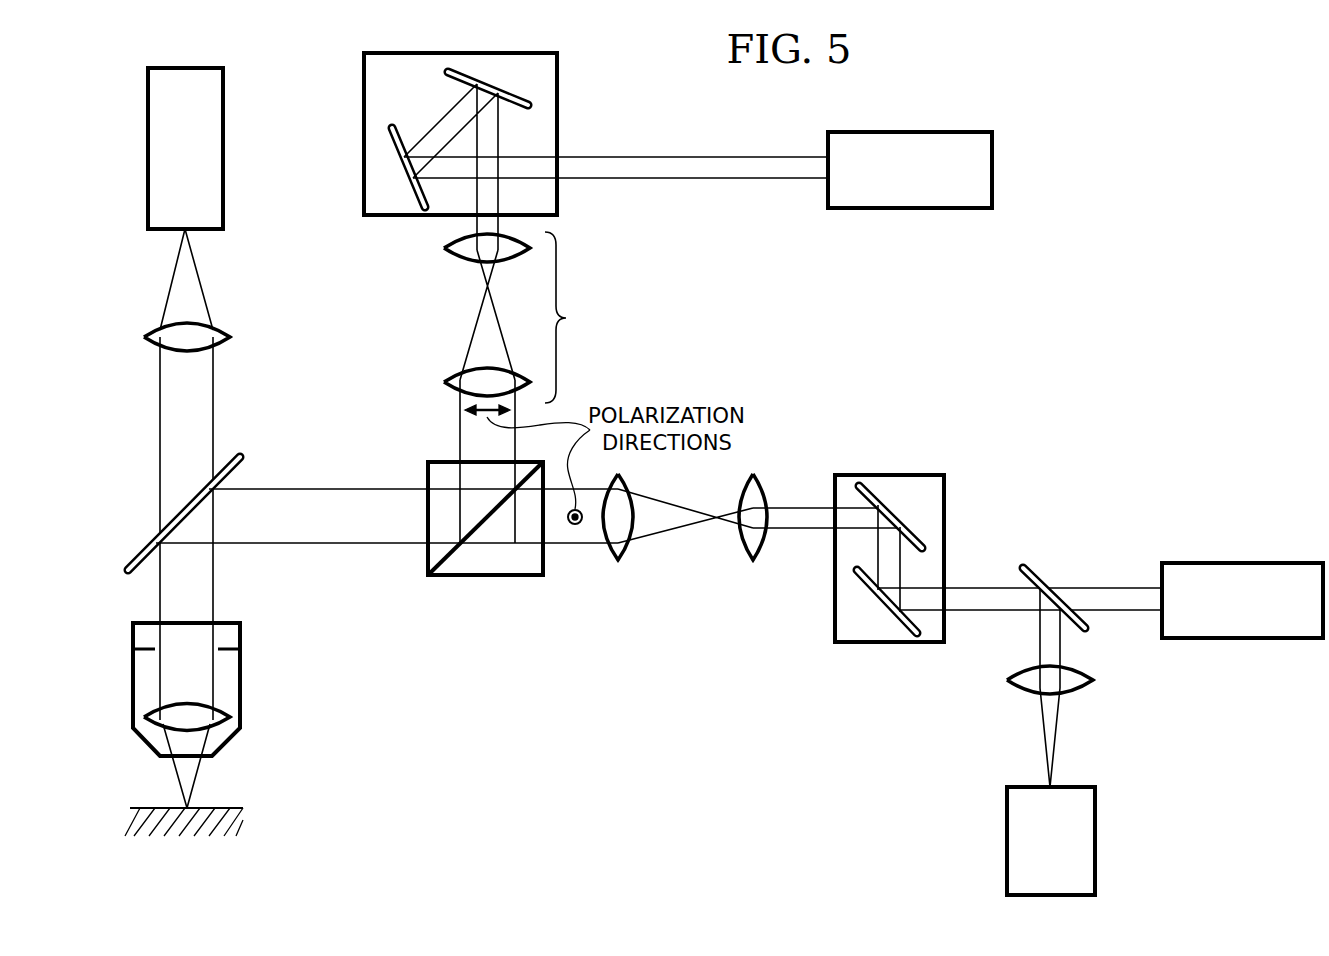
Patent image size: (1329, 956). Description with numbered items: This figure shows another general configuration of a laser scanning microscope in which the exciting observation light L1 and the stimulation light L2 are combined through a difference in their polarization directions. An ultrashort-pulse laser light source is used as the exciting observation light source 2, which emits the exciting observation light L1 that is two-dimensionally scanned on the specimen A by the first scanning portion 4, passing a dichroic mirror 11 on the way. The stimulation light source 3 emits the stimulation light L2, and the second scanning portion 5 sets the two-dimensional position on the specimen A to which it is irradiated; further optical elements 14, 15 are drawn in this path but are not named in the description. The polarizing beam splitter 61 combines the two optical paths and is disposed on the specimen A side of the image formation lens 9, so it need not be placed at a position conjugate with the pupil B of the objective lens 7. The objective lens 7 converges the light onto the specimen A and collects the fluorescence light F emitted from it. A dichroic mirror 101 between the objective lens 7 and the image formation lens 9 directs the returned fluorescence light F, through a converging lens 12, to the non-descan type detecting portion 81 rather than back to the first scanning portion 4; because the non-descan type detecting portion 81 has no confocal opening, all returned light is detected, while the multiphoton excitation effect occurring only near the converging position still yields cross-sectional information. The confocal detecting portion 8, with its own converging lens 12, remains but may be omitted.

The exciting observation light source 2 is at (1228, 563).
The stimulation light source 3 is at (910, 132).
The first scanning portion 4 is at (835, 620).
The second scanning portion 5 is at (557, 88).
The objective lens 7 is at (230, 713).
The detecting portion 8 is at (1095, 838).
The imaging lens 9 is at (618, 560).
The dichroic mirror 11 is at (1085, 628).
The converging lens 12 is at (145, 336).
The beam expander 14 is at (522, 387).
The lens 15 is at (760, 485).
The polarizing beam splitter 61 is at (445, 566).
The non-descan type detecting portion 81 is at (148, 148).
The dichroic mirror 101 is at (142, 548).
The specimen A is at (234, 808).
The pupil B is at (262, 648).
The fluorescence light F is at (160, 425).
The exciting observation light L1 is at (1112, 588).
The stimulation light L2 is at (685, 157).